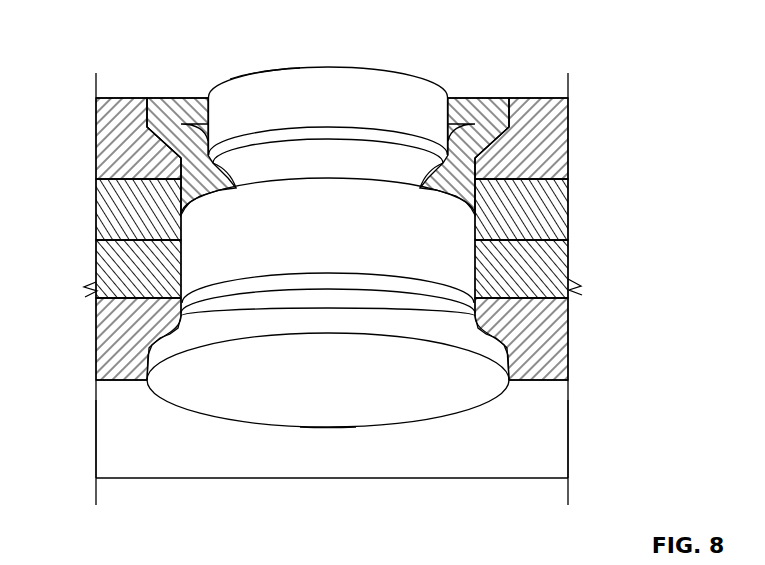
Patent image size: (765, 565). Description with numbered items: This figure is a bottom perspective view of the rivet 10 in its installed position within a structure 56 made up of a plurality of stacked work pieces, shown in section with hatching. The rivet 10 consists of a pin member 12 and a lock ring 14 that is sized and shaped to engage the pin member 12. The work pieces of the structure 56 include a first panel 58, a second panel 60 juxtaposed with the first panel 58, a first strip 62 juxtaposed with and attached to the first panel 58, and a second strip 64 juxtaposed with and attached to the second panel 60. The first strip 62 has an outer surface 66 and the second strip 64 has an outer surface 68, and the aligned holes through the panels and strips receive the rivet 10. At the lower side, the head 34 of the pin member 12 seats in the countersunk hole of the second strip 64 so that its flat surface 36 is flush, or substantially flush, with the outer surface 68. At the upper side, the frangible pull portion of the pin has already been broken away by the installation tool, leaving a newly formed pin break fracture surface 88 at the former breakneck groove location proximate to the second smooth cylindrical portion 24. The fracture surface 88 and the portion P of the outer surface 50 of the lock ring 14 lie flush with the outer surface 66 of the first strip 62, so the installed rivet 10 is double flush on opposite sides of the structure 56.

The rivet 10 is at (280, 432).
The pin member 12 is at (440, 265).
The lock ring 14 is at (503, 143).
The second smooth cylindrical portion 24 is at (325, 93).
The head 34 is at (478, 302).
The flat surface 36 is at (328, 378).
The outer surface 50 is at (473, 97).
The structure 56 is at (571, 218).
The first panel 58 is at (538, 205).
The second panel 60 is at (538, 278).
The first strip 62 is at (105, 124).
The second strip 64 is at (477, 343).
The outer surface 66 is at (123, 93).
The outer surface 68 is at (163, 455).
The pin break fracture surface 88 is at (260, 72).
The portion of the outer surface of the lock ring P is at (183, 98).